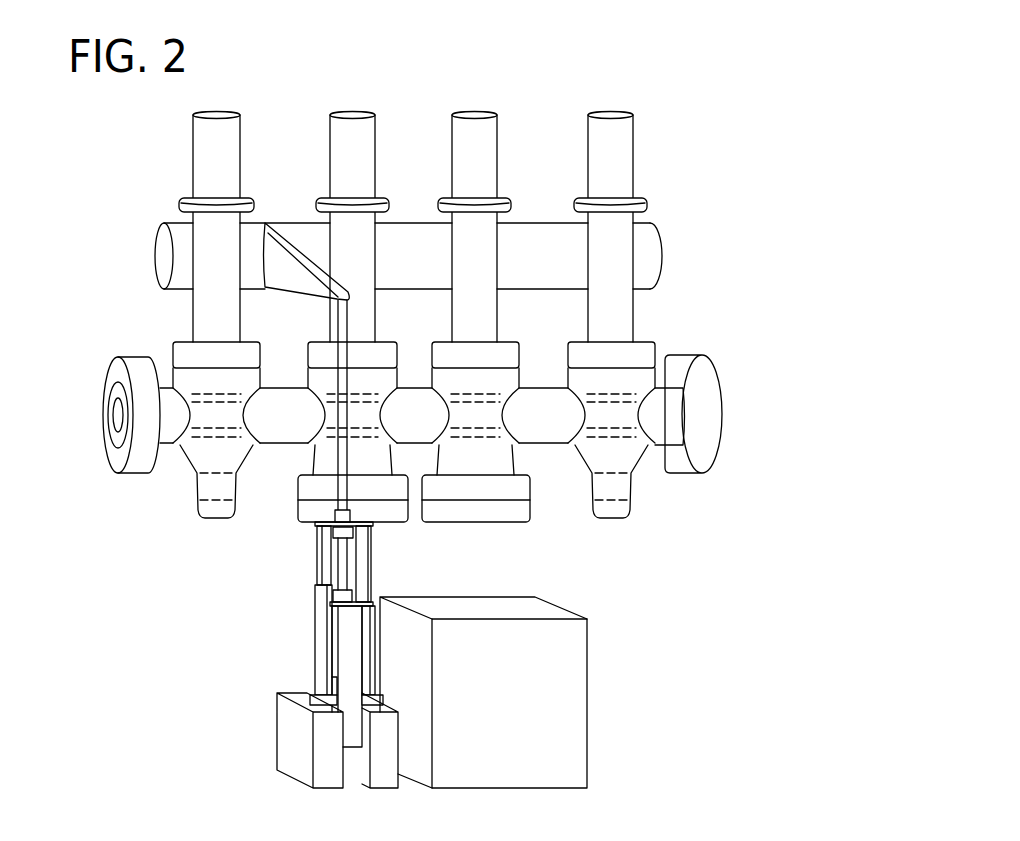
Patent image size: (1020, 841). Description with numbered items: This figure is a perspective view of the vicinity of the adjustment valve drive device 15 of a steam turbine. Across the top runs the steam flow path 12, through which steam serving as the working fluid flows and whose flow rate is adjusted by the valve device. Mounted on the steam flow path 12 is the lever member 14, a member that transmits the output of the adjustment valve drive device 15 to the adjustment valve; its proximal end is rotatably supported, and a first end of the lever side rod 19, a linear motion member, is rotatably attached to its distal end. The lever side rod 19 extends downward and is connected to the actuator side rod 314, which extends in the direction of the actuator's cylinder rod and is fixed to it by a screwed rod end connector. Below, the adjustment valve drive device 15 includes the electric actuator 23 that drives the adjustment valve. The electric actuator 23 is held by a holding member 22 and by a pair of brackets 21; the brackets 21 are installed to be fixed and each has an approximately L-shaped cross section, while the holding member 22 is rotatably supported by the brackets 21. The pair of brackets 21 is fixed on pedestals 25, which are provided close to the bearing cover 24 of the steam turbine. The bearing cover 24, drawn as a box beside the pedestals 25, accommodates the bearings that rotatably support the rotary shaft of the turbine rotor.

The steam flow path 12 is at (432, 317).
The lever member 14 is at (300, 230).
The lever side rod 19 is at (350, 323).
The adjustment valve drive device 15 is at (395, 655).
The holding member 22 is at (317, 545).
The actuator side rod 314 is at (343, 572).
The electric actuator 23 is at (362, 632).
The brackets 21 is at (314, 698).
The pedestals 25 is at (277, 728).
The bearing cover 24 is at (587, 686).